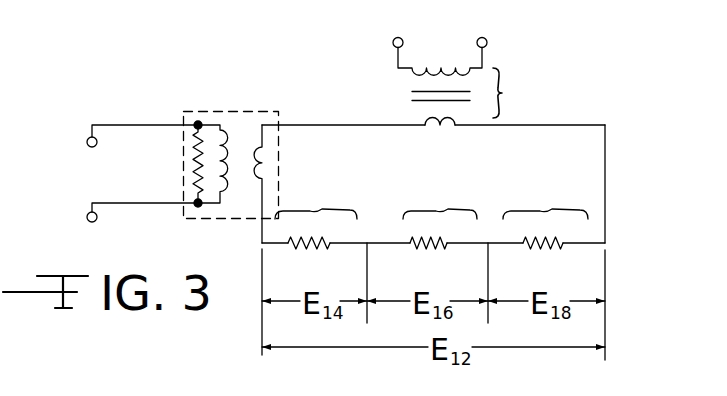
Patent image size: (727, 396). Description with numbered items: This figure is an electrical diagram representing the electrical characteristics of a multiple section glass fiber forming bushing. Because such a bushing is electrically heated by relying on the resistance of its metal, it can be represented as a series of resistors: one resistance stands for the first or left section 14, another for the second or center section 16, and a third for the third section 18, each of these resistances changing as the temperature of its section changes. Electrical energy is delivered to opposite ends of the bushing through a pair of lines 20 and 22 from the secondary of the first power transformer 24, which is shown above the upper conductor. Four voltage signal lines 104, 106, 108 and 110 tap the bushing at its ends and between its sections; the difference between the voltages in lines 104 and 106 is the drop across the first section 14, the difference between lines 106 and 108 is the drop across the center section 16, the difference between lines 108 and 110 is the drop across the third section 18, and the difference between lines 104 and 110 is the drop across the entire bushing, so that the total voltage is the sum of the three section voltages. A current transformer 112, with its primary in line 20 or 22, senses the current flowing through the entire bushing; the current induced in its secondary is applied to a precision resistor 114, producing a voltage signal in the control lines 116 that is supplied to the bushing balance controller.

The first or left section 14 is at (316, 223).
The second or center section 16 is at (440, 225).
The third or right section 18 is at (545, 226).
The line 20 is at (332, 124).
The line 22 is at (607, 193).
The first power transformer 24 is at (470, 82).
The line 104 is at (260, 272).
The line 106 is at (395, 263).
The line 108 is at (512, 261).
The line 110 is at (608, 278).
The current transformer 112 is at (227, 111).
The precision resistor 114 is at (195, 178).
The control lines 116 is at (120, 125).